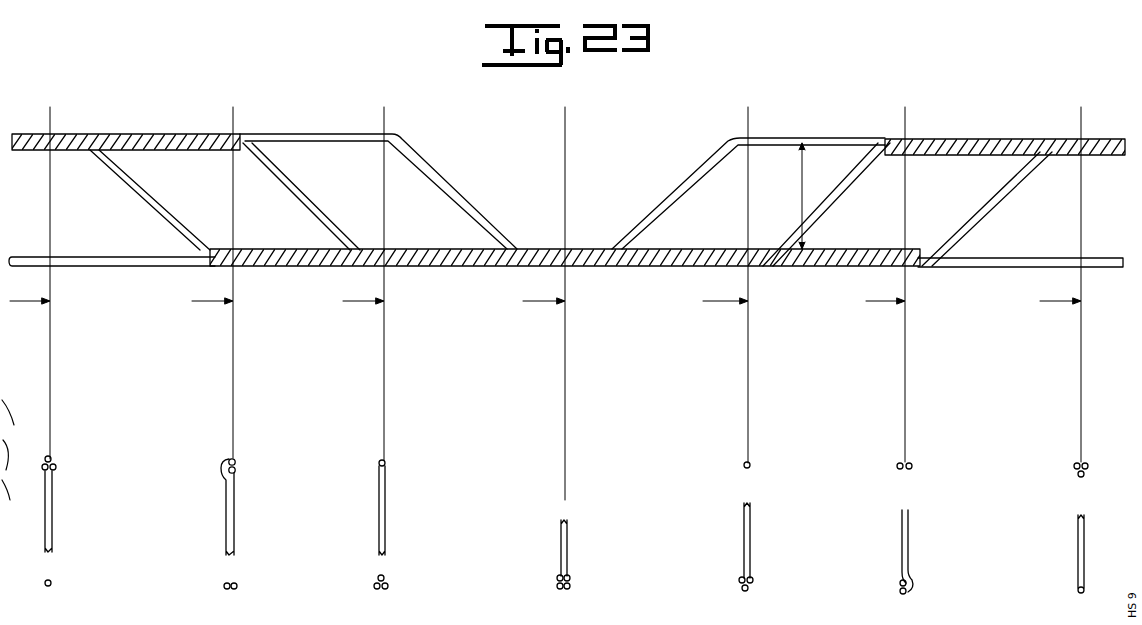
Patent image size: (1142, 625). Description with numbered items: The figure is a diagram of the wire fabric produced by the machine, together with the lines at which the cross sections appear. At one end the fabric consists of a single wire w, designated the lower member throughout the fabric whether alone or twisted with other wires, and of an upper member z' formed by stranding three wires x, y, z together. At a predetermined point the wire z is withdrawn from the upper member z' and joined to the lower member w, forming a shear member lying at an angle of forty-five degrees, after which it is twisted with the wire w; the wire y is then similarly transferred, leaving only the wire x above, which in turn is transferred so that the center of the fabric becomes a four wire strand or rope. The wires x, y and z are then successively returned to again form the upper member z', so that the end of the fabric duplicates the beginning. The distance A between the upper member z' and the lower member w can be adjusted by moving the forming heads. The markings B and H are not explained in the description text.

The single wire w is at (12, 259).
The wire x is at (475, 200).
The wire y is at (318, 208).
The wire z is at (563, 382).
The upper member z' is at (568, 156).
The distance between upper member and lower member A is at (92, 210).
The twisted bottom strand B is at (826, 267).
The height of fabric H is at (808, 196).